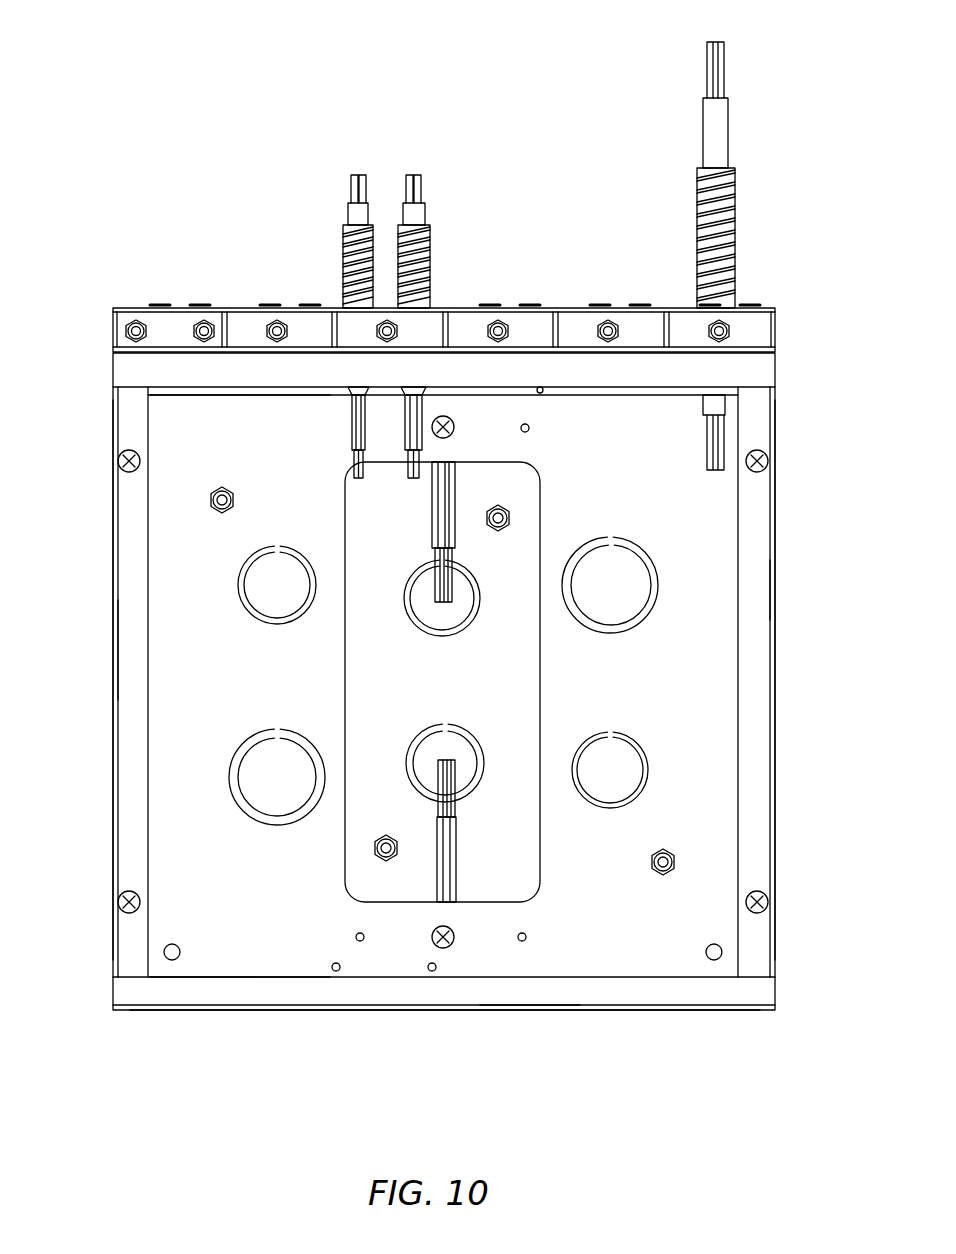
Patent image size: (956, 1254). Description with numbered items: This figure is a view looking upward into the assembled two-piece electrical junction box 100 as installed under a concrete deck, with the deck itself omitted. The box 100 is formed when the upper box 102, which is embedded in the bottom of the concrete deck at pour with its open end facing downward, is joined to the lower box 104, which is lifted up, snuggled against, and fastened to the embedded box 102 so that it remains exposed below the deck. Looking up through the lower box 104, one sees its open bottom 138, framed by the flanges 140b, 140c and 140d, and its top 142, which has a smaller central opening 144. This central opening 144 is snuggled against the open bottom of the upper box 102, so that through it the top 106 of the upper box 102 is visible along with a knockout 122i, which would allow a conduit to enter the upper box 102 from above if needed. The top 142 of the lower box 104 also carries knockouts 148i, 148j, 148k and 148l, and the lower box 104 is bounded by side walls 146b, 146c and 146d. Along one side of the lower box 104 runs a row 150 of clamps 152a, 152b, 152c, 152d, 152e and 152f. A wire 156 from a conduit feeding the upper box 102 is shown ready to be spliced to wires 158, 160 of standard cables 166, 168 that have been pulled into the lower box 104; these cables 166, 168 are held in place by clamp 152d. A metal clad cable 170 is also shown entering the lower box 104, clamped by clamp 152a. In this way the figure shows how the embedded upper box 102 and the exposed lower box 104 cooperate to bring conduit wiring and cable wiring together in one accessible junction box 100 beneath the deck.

The two-piece electrical junction box 100 is at (238, 145).
The upper box 102 is at (362, 548).
The lower box 104 is at (288, 928).
The top 106 is at (509, 688).
The knockout 122i is at (430, 612).
The open bottom 138 is at (228, 933).
The flange 140b is at (762, 678).
The flange 140c is at (680, 990).
The flange 140d is at (130, 772).
The top 142 is at (659, 681).
The central opening 144 is at (388, 712).
The side wall 146b is at (788, 602).
The side wall 146c is at (530, 1020).
The side wall 146d is at (98, 632).
The knockout 148i is at (612, 787).
The knockout 148j is at (276, 797).
The knockout 148k is at (267, 590).
The knockout 148l is at (615, 580).
The row of clamps 150 is at (798, 324).
The clamp 152a is at (755, 325).
The clamp 152b is at (648, 325).
The clamp 152c is at (538, 322).
The clamp 152d is at (438, 318).
The clamp 152e is at (285, 322).
The clamp 152f is at (155, 325).
The wire 156 is at (447, 492).
The wire 158 is at (418, 408).
The wire 160 is at (352, 428).
The standard cable 166 is at (430, 240).
The standard cable 168 is at (348, 285).
The metal clad cable 170 is at (703, 187).